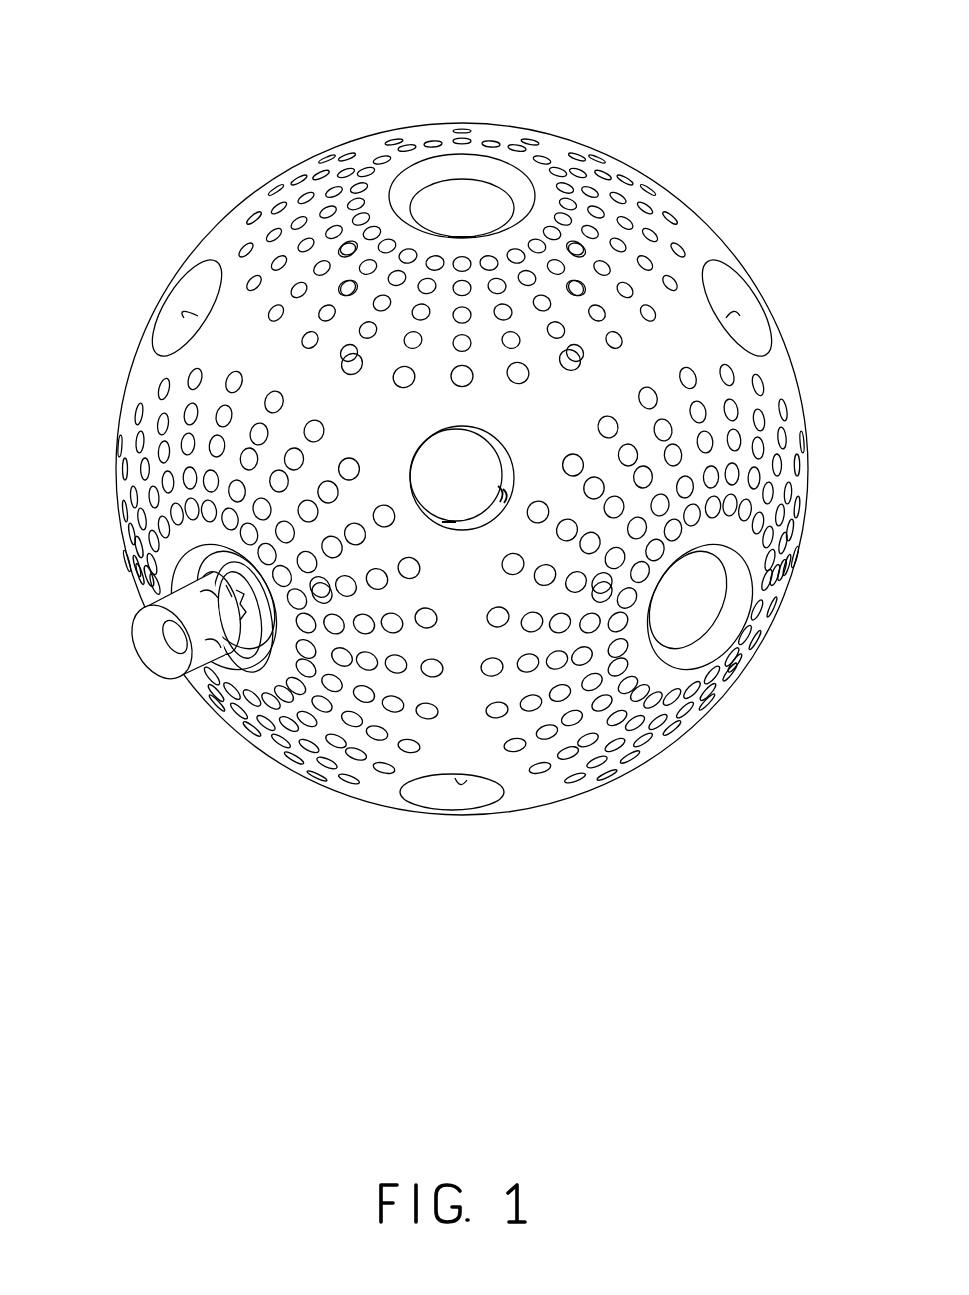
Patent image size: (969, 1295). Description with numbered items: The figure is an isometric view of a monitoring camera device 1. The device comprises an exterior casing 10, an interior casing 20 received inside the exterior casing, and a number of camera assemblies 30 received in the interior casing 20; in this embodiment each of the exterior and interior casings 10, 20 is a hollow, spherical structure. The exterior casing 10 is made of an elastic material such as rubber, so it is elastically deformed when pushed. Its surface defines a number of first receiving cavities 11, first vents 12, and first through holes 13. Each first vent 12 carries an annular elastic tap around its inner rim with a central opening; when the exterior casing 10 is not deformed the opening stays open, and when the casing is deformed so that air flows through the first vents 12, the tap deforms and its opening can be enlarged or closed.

The monitoring camera device 1 is at (221, 56).
The exterior casing 10 is at (698, 245).
The first receiving cavity 11 is at (252, 657).
The first vent 12 is at (540, 770).
The first through hole 13 is at (432, 788).
The interior casing 20 is at (450, 463).
The camera assembly 30 is at (160, 643).